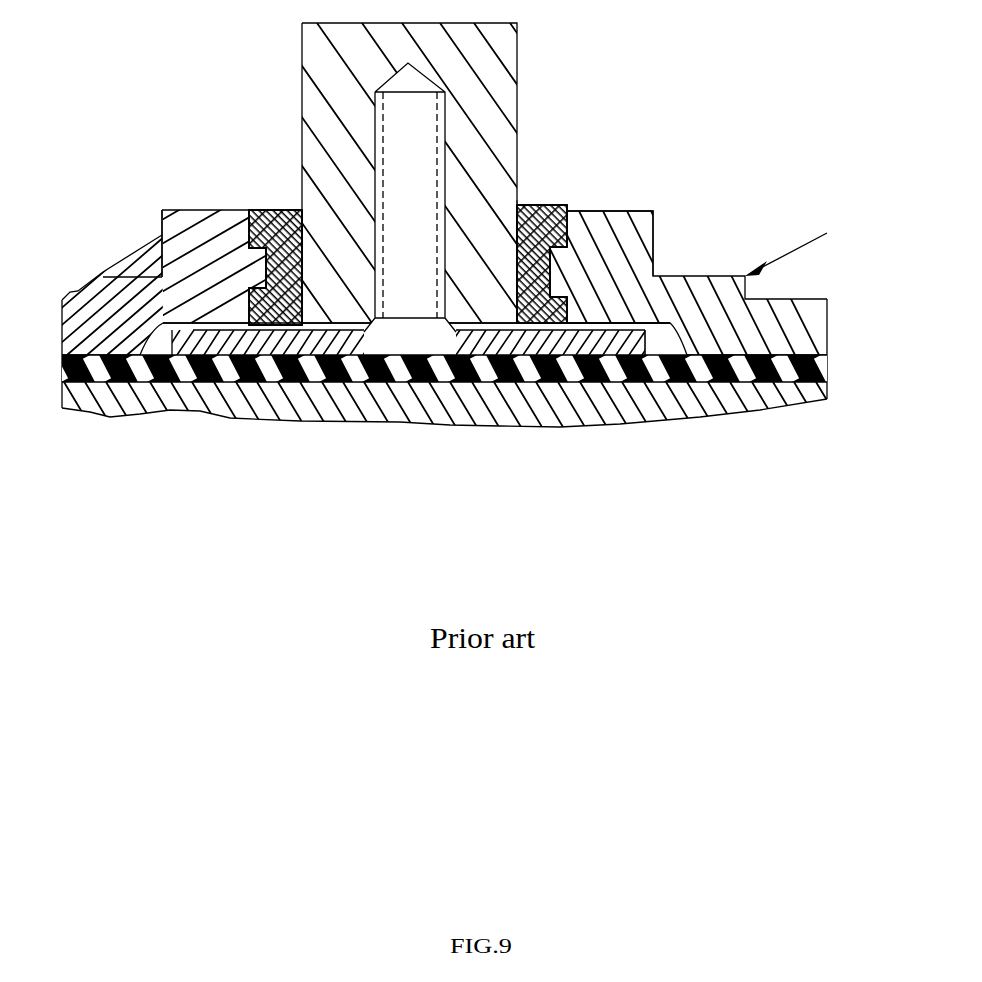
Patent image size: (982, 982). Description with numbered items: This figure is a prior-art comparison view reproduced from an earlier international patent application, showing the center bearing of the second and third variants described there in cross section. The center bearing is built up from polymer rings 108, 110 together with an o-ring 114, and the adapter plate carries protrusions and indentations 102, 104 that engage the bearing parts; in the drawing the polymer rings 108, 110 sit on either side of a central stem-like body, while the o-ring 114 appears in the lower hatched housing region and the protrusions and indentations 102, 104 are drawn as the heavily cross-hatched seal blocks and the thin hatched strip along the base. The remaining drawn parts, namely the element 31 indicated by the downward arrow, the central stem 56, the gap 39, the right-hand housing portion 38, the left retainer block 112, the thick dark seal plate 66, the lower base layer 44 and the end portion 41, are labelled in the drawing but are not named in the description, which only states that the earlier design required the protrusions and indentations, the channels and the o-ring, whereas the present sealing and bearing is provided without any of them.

The seal assembly indicator 31 is at (272, 153).
The stem 56 is at (517, 78).
The gap between stem and seal 39 is at (517, 200).
The protrusions and indentations 102 is at (250, 205).
The housing 38 is at (575, 211).
The polymer ring 108 is at (653, 233).
The retainer block 112 is at (245, 240).
The o-ring 114 is at (163, 410).
The seal plate 66 is at (462, 385).
The polymer ring 110 is at (504, 332).
The protrusions and indentations 104 is at (614, 362).
The base layer 44 is at (717, 400).
The gasket end 41 is at (667, 345).